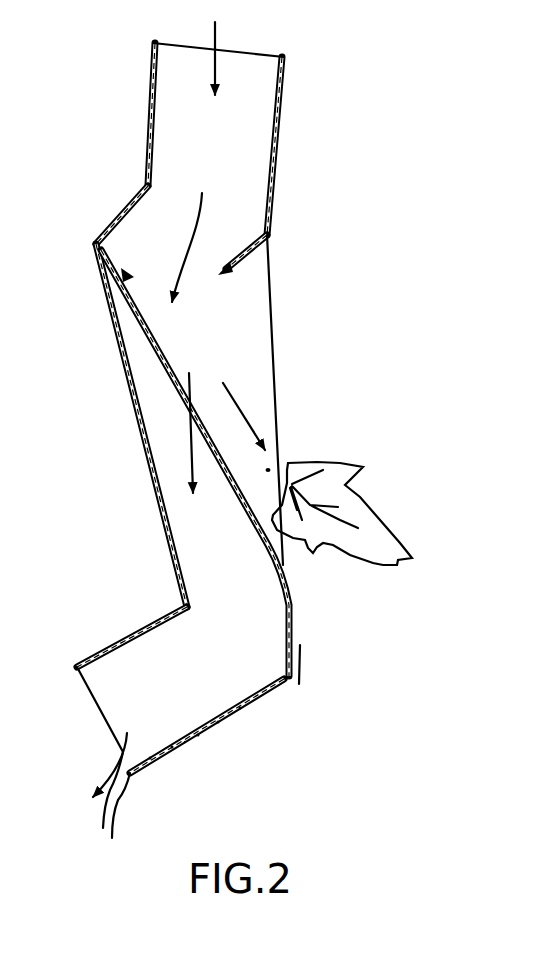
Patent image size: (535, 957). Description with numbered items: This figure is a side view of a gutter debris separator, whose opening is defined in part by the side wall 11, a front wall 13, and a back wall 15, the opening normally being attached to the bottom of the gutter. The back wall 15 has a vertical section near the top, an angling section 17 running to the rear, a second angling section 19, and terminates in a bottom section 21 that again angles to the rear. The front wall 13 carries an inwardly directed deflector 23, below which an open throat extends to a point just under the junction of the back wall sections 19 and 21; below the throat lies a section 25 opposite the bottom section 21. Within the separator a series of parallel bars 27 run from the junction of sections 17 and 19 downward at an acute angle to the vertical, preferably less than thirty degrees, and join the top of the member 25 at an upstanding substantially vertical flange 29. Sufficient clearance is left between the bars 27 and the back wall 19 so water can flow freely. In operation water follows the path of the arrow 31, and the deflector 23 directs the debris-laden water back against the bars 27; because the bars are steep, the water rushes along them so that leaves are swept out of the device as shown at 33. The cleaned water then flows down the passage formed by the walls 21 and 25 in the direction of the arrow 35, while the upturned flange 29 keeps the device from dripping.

The side wall 11 is at (265, 372).
The front wall 13 is at (282, 153).
The back wall 15 is at (150, 106).
The angling section 17 is at (118, 210).
The second angling section 19 is at (140, 424).
The bottom section 21 is at (143, 630).
The deflector 23 is at (248, 257).
The section 25 is at (253, 703).
The parallel bars 27 is at (168, 367).
The upstanding substantially vertical flange 29 is at (303, 658).
The arrow 31 is at (222, 38).
The swept-out debris 33 is at (347, 460).
The arrow 35 is at (105, 752).